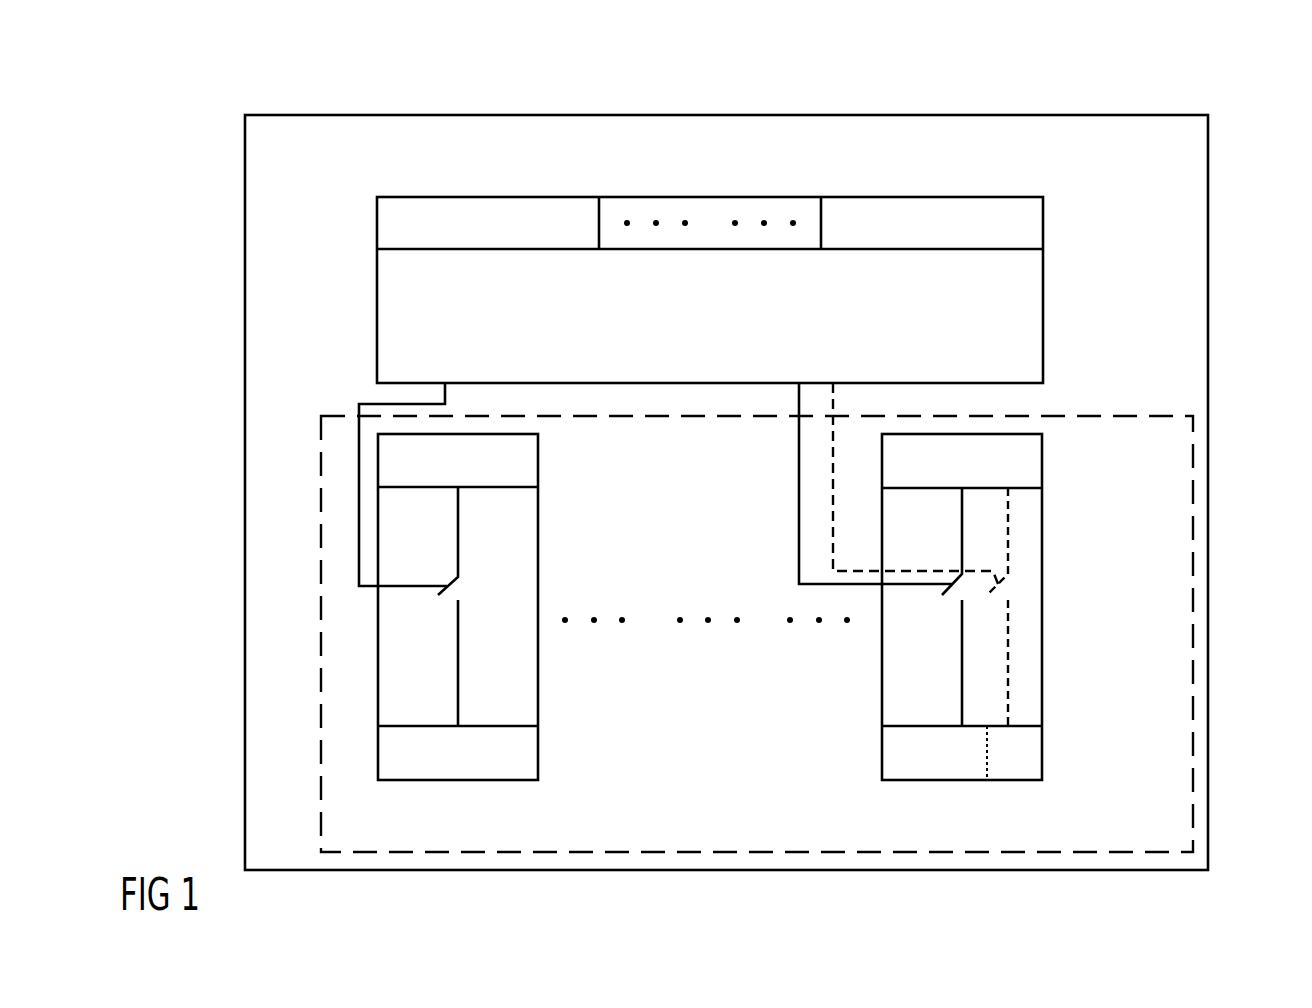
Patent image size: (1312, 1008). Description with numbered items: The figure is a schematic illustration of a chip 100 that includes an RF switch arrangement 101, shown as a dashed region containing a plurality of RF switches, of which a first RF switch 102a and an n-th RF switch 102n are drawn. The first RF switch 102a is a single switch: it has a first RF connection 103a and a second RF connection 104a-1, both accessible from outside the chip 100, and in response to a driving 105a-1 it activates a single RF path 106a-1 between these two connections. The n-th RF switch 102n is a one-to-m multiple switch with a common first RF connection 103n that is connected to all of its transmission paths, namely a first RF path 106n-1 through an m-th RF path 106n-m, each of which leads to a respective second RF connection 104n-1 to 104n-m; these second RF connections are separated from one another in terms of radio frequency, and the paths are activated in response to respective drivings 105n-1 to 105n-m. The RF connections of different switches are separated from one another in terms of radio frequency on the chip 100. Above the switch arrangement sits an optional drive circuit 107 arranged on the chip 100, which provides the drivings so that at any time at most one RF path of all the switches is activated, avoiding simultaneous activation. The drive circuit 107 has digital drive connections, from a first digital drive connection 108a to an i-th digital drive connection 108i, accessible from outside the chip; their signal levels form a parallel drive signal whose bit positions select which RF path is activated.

The chip 100 is at (1208, 105).
The RF switch arrangement 101 is at (1162, 415).
The first RF switch 102a is at (538, 545).
The n-th RF switch 102n is at (1042, 603).
The first RF connection 103a is at (538, 456).
The first RF connection 103n is at (1042, 458).
The second RF connection 104a-1 is at (458, 763).
The second RF connection 104n-1 is at (915, 763).
The second RF connection 104n-m is at (1012, 763).
The driving 105a-1 is at (358, 404).
The driving 105n-1 is at (799, 488).
The driving 105n-m is at (833, 455).
The RF path 106a-1 is at (459, 670).
The RF path 106n-1 is at (961, 680).
The RF path 106n-m is at (1009, 670).
The drive circuit 107 is at (1043, 316).
The first digital drive connection 108a is at (487, 208).
The i-th digital drive connection 108i is at (929, 208).